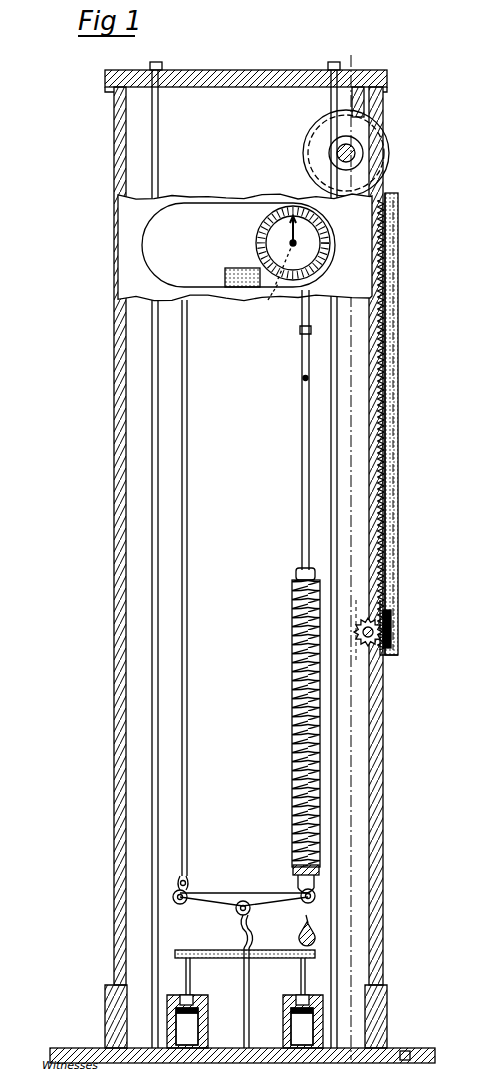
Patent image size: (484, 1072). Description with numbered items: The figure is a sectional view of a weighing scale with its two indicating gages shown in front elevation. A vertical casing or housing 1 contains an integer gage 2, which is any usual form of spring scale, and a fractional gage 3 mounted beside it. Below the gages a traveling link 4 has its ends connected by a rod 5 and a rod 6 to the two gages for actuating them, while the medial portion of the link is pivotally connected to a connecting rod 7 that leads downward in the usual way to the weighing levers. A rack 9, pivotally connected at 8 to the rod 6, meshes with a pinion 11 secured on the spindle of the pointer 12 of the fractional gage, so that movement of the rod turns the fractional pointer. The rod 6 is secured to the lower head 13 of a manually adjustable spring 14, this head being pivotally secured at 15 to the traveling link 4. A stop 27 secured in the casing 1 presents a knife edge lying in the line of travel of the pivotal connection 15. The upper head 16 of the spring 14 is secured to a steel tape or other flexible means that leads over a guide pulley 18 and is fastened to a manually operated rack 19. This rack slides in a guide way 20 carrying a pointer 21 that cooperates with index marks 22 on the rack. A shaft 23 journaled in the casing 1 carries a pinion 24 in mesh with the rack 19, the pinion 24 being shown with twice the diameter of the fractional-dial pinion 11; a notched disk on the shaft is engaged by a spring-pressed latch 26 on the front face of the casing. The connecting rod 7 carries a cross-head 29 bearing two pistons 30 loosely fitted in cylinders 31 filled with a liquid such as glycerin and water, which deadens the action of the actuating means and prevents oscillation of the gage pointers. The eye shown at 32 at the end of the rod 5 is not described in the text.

The vertical casing 1 is at (118, 338).
The integer gage 2 is at (110, 254).
The fractional gage 3 is at (288, 210).
The traveling link 4 is at (244, 900).
The rod 5 is at (187, 768).
The connecting rod 6 is at (302, 545).
The connecting rod 7 is at (248, 978).
The pivotal connection 8 is at (302, 378).
The rack 9 is at (302, 330).
The pinion 11 is at (272, 296).
The pointer 12 is at (268, 240).
The lower head 13 is at (298, 870).
The manually adjustable spring 14 is at (292, 690).
The pivotal connection 15 is at (316, 896).
The upper head 16 is at (294, 584).
The guide pulley 18 is at (389, 145).
The manually operated rack 19 is at (398, 358).
The guide way 20 is at (398, 486).
The pointer 21 is at (394, 626).
The index marks 22 is at (398, 578).
The shaft 23 is at (362, 643).
The pinion 24 is at (360, 622).
The spring-pressed latch 26 is at (308, 926).
The stop 27 is at (315, 940).
The cross-head 29 is at (215, 944).
The pistons 30 is at (200, 1012).
The cylinders 31 is at (206, 1032).
The eye 32 is at (178, 905).